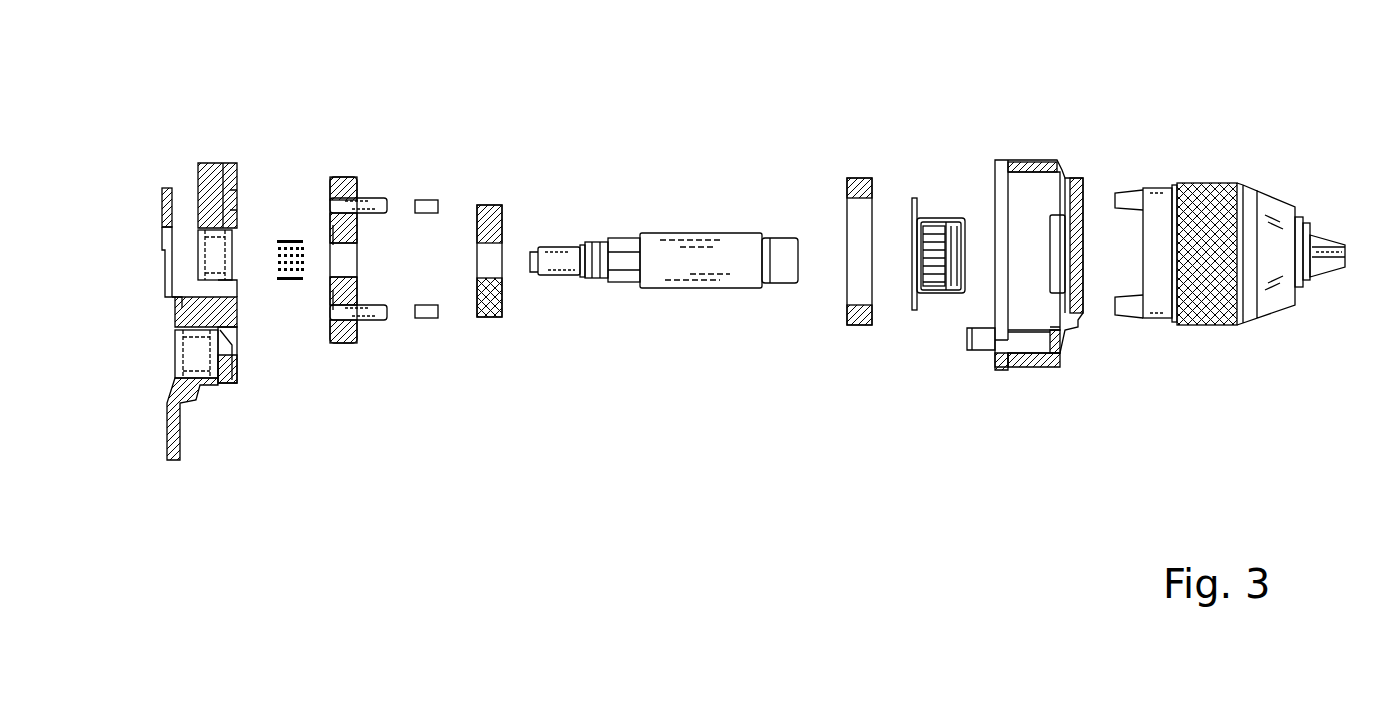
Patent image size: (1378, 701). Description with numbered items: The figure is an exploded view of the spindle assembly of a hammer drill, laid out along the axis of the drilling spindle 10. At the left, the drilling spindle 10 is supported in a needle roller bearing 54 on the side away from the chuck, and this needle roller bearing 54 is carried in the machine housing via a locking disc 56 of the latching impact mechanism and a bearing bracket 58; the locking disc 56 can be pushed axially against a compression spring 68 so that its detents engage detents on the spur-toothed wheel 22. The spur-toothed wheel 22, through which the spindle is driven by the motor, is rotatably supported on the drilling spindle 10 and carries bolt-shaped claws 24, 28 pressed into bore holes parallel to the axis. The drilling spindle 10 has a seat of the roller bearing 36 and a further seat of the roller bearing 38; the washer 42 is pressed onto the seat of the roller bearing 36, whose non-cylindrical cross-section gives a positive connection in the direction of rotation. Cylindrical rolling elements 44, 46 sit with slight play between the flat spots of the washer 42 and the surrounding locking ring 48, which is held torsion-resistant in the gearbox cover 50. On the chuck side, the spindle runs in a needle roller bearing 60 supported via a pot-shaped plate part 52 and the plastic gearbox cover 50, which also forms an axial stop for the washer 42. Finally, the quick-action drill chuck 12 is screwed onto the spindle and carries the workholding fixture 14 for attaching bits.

The drilling spindle 10 is at (664, 269).
The quick-action drill chuck 12 is at (1239, 189).
The workholding fixture 14 is at (1323, 213).
The spur-toothed wheel 22 is at (335, 178).
The claw 24 is at (370, 203).
The claw 28 is at (370, 316).
The seat of the roller bearing 36 is at (620, 238).
The seat of the roller bearing 38 is at (597, 240).
The washer 42 is at (502, 315).
The cylindrical rolling element 44 is at (428, 203).
The cylindrical rolling element 46 is at (428, 315).
The locking ring 48 is at (858, 178).
The gearbox cover 50 is at (1038, 163).
The pot-shaped plate part 52 is at (939, 269).
The needle roller bearing 54 is at (175, 332).
The locking disc 56 is at (195, 222).
The bearing bracket 58 is at (225, 190).
The needle roller bearing 60 is at (932, 255).
The compression spring 68 is at (295, 280).